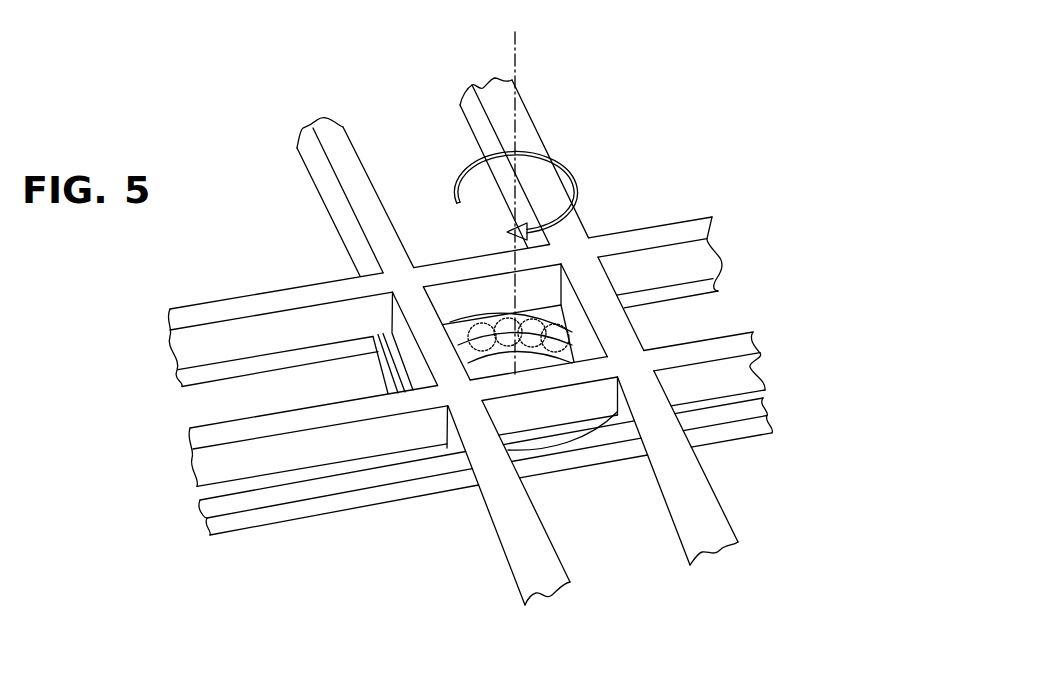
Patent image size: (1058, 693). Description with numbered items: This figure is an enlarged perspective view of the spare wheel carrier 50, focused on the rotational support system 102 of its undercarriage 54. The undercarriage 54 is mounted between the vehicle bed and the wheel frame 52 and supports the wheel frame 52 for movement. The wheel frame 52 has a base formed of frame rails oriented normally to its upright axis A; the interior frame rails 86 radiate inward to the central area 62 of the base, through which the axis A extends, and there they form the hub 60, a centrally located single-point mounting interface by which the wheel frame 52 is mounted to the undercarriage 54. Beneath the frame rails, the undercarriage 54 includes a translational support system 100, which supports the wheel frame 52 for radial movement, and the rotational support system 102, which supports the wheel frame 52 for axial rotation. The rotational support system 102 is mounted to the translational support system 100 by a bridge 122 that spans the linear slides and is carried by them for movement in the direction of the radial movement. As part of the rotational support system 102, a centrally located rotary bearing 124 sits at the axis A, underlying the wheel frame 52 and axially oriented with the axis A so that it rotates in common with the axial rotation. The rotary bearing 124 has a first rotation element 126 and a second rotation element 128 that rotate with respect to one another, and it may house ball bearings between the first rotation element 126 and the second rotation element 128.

The spare wheel carrier 50 is at (203, 522).
The wheel frame 52 is at (306, 197).
The undercarriage 54 is at (228, 540).
The hub 60 is at (437, 262).
The central area 62 is at (449, 404).
The interior frame rails 86 is at (697, 231).
The translational support system 100 is at (286, 532).
The rotational support system 102 is at (462, 324).
The bridge 122 is at (352, 486).
The rotary bearing 124 is at (684, 143).
The first rotation element 126 is at (586, 350).
The second rotation element 128 is at (579, 345).
The axis A is at (519, 70).